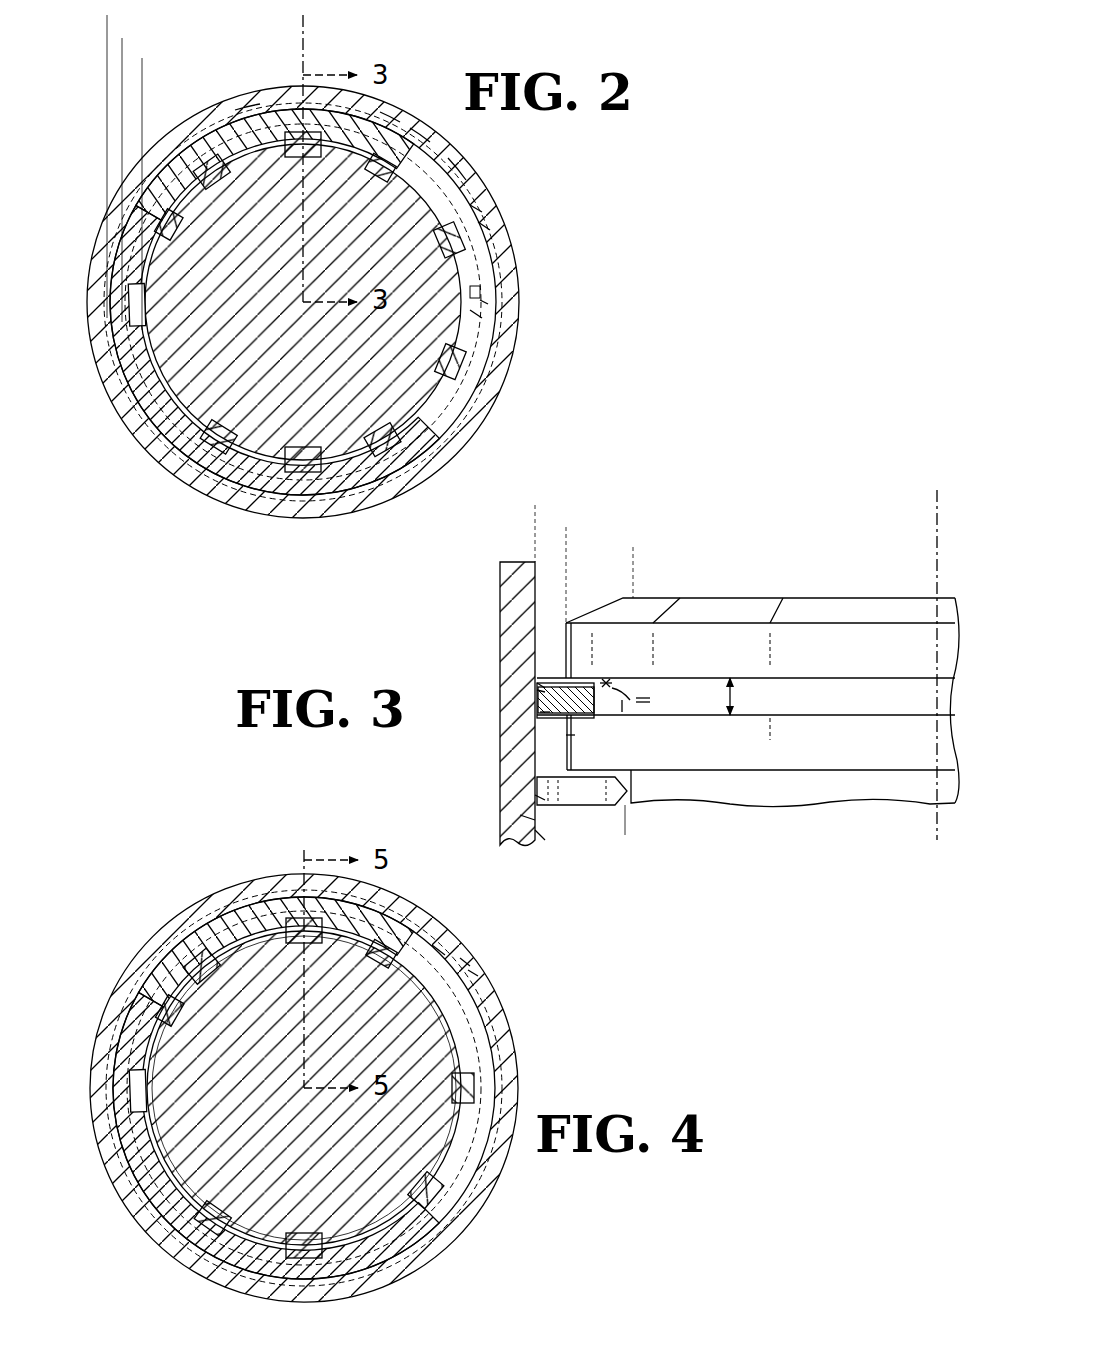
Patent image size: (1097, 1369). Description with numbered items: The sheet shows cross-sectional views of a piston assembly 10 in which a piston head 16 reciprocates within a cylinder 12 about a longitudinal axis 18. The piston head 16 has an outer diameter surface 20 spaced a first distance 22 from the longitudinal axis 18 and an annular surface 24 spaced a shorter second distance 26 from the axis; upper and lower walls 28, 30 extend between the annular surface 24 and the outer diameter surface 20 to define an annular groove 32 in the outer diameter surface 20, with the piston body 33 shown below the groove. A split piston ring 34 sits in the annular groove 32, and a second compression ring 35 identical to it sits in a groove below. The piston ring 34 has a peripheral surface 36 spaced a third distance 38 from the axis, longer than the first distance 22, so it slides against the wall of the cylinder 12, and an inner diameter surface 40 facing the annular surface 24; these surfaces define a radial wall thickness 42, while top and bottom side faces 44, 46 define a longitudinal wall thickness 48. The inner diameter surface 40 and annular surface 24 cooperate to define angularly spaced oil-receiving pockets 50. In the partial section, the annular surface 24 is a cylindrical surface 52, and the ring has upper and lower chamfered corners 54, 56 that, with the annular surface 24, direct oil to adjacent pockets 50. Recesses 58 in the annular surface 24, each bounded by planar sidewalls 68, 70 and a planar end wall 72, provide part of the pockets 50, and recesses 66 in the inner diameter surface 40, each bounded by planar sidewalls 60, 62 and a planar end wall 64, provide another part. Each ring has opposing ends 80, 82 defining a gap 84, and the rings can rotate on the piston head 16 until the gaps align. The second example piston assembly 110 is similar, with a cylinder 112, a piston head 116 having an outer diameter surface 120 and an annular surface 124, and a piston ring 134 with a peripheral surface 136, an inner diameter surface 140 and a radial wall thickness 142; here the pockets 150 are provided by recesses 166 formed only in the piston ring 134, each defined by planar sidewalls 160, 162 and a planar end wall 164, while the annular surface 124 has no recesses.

In FIG. 3, the piston assembly 10 is at (585, 840).
In FIG. 2, the cylinder 12 is at (165, 457).
In FIG. 3, the cylinder 12 is at (542, 842).
In FIG. 2, the piston head 16 is at (480, 446).
In FIG. 3, the piston head 16 is at (858, 794).
In FIG. 3, the longitudinal axis 18 is at (937, 492).
In FIG. 2, the outer diameter surface 20 is at (130, 395).
In FIG. 3, the outer diameter surface 20 is at (535, 792).
In FIG. 2, the first distance 22 is at (122, 45).
In FIG. 3, the first distance 22 is at (937, 532).
In FIG. 2, the annular surface 24 is at (120, 320).
In FIG. 3, the annular surface 24 is at (640, 700).
In FIG. 2, the second distance 26 is at (142, 65).
In FIG. 3, the second distance 26 is at (937, 552).
In FIG. 3, the upper wall 28 is at (540, 688).
In FIG. 3, the lower wall 30 is at (565, 735).
In FIG. 3, the annular groove 32 is at (808, 706).
In FIG. 3, the shaft body 33 is at (810, 794).
In FIG. 2, the piston ring 34 is at (122, 236).
In FIG. 3, the piston ring 34 is at (540, 691).
In FIG. 2, the second compression ring 35 is at (460, 152).
In FIG. 3, the second compression ring 35 is at (520, 816).
In FIG. 2, the peripheral surface 36 is at (126, 300).
In FIG. 3, the peripheral surface 36 is at (560, 700).
In FIG. 2, the third distance 38 is at (303, 22).
In FIG. 3, the third distance 38 is at (937, 510).
In FIG. 2, the inner diameter surface 40 is at (152, 240).
In FIG. 3, the inner diameter surface 40 is at (630, 712).
In FIG. 2, the radial wall thickness 42 is at (472, 377).
In FIG. 3, the radial wall thickness 42 is at (535, 819).
In FIG. 3, the top side face 44 is at (545, 695).
In FIG. 3, the bottom side face 46 is at (545, 712).
In FIG. 3, the longitudinal wall thickness 48 is at (733, 696).
In FIG. 2, the pockets 50 is at (252, 455).
In FIG. 3, the pockets 50 is at (606, 682).
In FIG. 3, the cylindrical surface 52 is at (720, 769).
In FIG. 3, the upper chamfered corner 54 is at (620, 690).
In FIG. 3, the lower chamfered corner 56 is at (625, 702).
In FIG. 2, the recesses 58 is at (324, 498).
In FIG. 3, the recesses 58 is at (615, 620).
In FIG. 2, the planar sidewall 60 is at (482, 290).
In FIG. 2, the planar sidewall 62 is at (486, 314).
In FIG. 2, the planar end wall 64 is at (488, 302).
In FIG. 2, the recesses 66 is at (215, 440).
In FIG. 2, the planar sidewall 68 is at (472, 205).
In FIG. 2, the planar sidewall 70 is at (492, 248).
In FIG. 2, the planar end wall 72 is at (480, 224).
In FIG. 2, the opposing end 80 is at (402, 115).
In FIG. 3, the opposing end 80 is at (535, 798).
In FIG. 2, the opposing end 82 is at (262, 98).
In FIG. 2, the gap 84 is at (392, 104).
In FIG. 4, the piston assembly 110 is at (178, 890).
In FIG. 4, the cylinder 112 is at (160, 1226).
In FIG. 4, the piston head 116 is at (452, 1246).
In FIG. 4, the outer diameter surface 120 is at (118, 1160).
In FIG. 4, the annular surface 124 is at (122, 1092).
In FIG. 4, the piston ring 134 is at (130, 1000).
In FIG. 4, the peripheral surface 136 is at (122, 1075).
In FIG. 4, the inner diameter surface 140 is at (142, 985).
In FIG. 4, the radial wall thickness 142 is at (470, 1162).
In FIG. 4, the pockets 150 is at (228, 1238).
In FIG. 4, the planar sidewall 160 is at (435, 944).
In FIG. 4, the planar sidewall 162 is at (474, 968).
In FIG. 4, the planar end wall 164 is at (464, 958).
In FIG. 4, the recesses 166 is at (258, 1228).